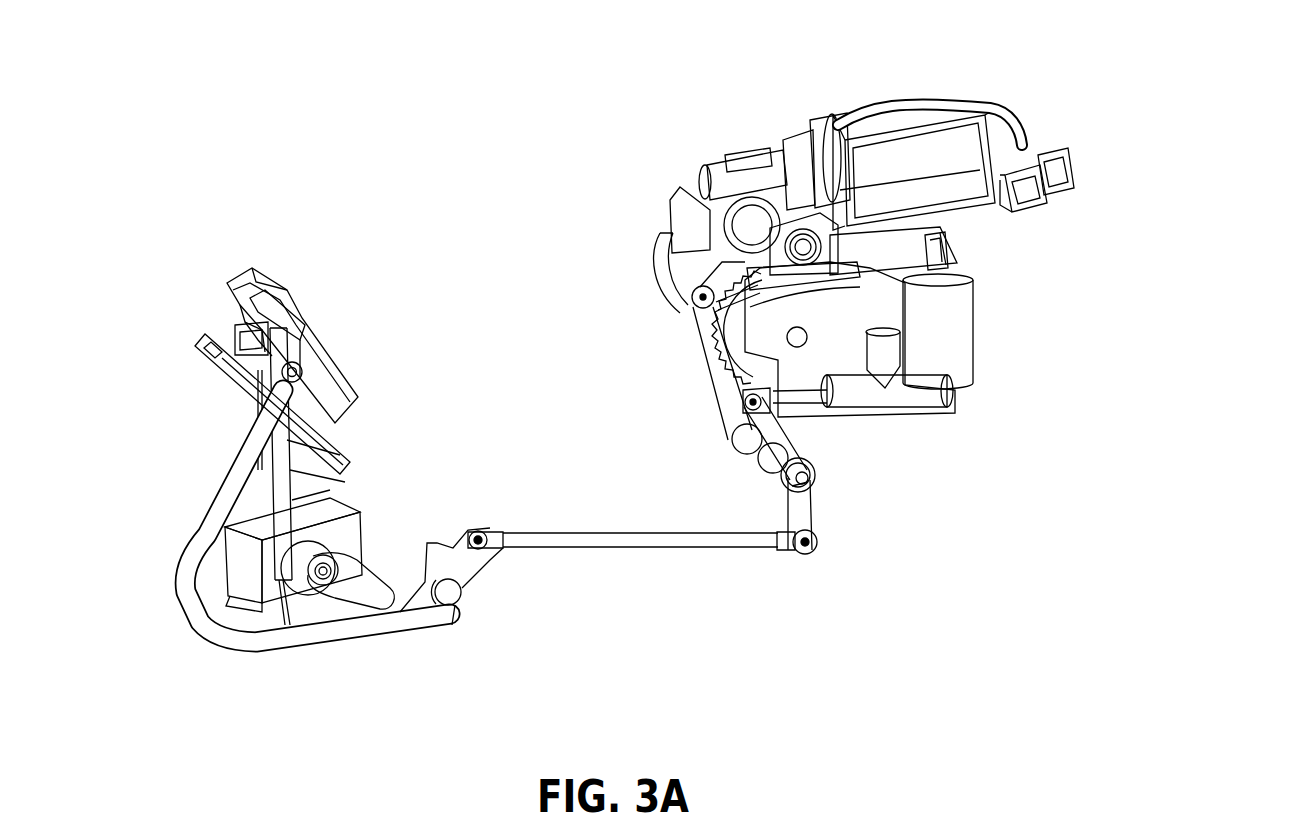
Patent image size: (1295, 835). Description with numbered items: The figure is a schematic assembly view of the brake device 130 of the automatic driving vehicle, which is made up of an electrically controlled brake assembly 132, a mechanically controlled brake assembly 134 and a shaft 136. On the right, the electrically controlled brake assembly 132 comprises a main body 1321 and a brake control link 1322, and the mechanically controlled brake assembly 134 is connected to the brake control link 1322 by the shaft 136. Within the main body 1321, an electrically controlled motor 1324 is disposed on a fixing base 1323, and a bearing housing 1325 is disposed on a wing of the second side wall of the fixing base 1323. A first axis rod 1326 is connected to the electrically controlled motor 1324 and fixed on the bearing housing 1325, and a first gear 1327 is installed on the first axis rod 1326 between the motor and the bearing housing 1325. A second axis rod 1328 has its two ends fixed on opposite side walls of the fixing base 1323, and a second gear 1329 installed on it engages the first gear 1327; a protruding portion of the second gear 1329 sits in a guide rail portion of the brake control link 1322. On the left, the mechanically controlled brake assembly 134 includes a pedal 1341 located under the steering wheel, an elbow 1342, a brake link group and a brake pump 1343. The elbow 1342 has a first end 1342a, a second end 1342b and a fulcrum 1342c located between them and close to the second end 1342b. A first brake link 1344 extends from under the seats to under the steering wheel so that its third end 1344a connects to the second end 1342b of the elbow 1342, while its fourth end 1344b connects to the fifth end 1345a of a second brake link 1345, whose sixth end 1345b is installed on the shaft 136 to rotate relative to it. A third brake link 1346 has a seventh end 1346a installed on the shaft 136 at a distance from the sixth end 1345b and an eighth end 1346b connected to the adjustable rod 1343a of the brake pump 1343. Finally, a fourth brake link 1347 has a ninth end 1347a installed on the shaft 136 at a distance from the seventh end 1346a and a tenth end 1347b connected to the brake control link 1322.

The brake device 130 is at (1010, 705).
The electrically controlled brake assembly 132 is at (968, 66).
The mechanically controlled brake assembly 134 is at (243, 187).
The shaft 136 is at (814, 480).
The main body 1321 is at (1142, 91).
The brake control link 1322 is at (667, 233).
The fixing base 1323 is at (940, 263).
The electrically controlled motor 1324 is at (965, 207).
The bearing housing 1325 is at (992, 177).
The first axis rod 1326 is at (1030, 182).
The first gear 1327 is at (837, 132).
The second axis rod 1328 is at (907, 312).
The second gear 1329 is at (900, 283).
The pedal 1341 is at (333, 345).
The elbow 1342 is at (183, 578).
The first end 1342a is at (300, 397).
The second end 1342b is at (470, 556).
The fulcrum 1342c is at (455, 604).
The brake pump 1343 is at (963, 357).
The adjustable rod 1343a is at (832, 407).
The first brake link 1344 is at (663, 542).
The third end 1344a is at (496, 530).
The fourth end 1344b is at (792, 556).
The second brake link 1345 is at (808, 523).
The fifth end 1345a is at (815, 548).
The sixth end 1345b is at (788, 492).
The third brake link 1346 is at (778, 418).
The seventh end 1346a is at (750, 455).
The eighth end 1346b is at (735, 413).
The fourth brake link 1347 is at (697, 333).
The ninth end 1347a is at (733, 446).
The tenth end 1347b is at (700, 287).